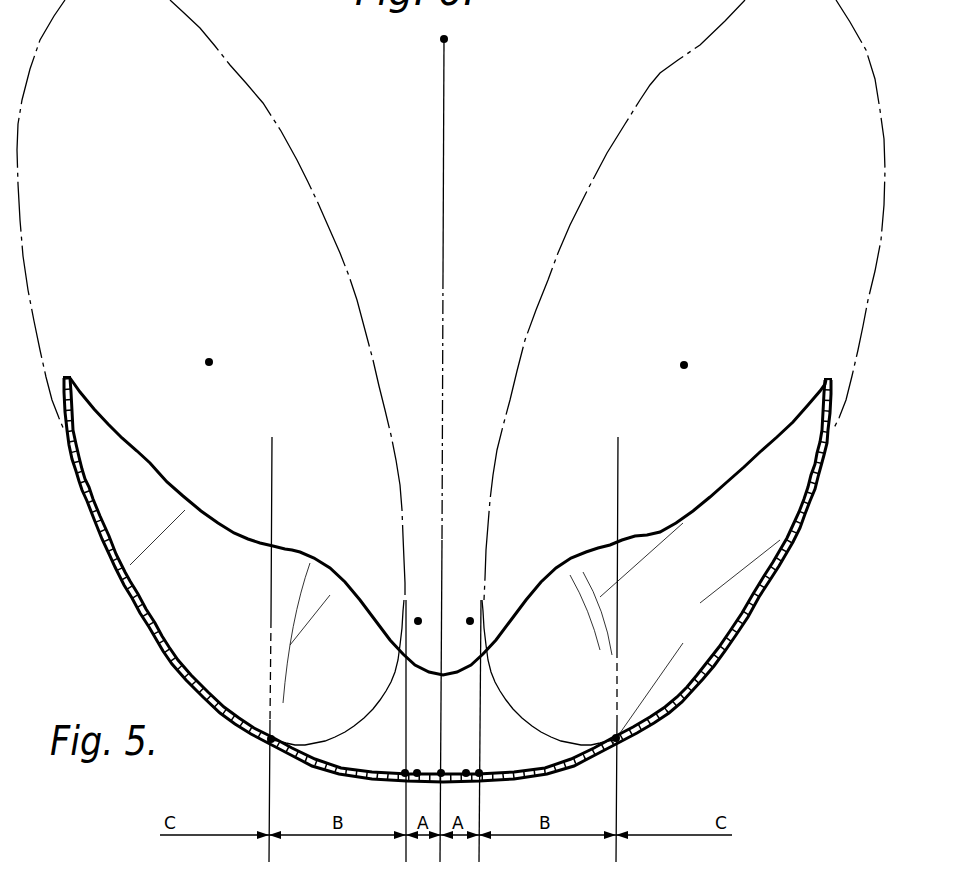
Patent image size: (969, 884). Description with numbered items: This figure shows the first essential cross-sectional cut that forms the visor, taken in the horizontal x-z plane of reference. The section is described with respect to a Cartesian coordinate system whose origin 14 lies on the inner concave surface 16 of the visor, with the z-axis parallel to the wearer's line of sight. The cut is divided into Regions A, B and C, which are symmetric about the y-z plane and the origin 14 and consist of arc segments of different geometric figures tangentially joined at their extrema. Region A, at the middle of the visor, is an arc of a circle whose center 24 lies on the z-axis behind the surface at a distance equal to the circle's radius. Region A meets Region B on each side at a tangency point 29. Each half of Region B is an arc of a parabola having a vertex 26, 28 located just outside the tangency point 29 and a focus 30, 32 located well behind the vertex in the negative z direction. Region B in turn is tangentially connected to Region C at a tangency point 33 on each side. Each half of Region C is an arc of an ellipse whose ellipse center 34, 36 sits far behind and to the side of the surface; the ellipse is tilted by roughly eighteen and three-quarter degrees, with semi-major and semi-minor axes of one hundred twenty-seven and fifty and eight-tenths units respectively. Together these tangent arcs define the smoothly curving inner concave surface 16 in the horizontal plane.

The origin 14 is at (441, 773).
The inner concave surface 16 is at (740, 608).
The center of the circle 24 is at (448, 39).
The vertex of the parabola 26 is at (405, 777).
The vertex of the parabola 28 is at (480, 780).
The tangency point 29 is at (417, 773).
The focus of the parabola 30 is at (418, 621).
The focus of the parabola 32 is at (470, 621).
The tangency point 33 is at (271, 739).
The ellipse center 34 is at (209, 362).
The ellipse center 36 is at (684, 365).